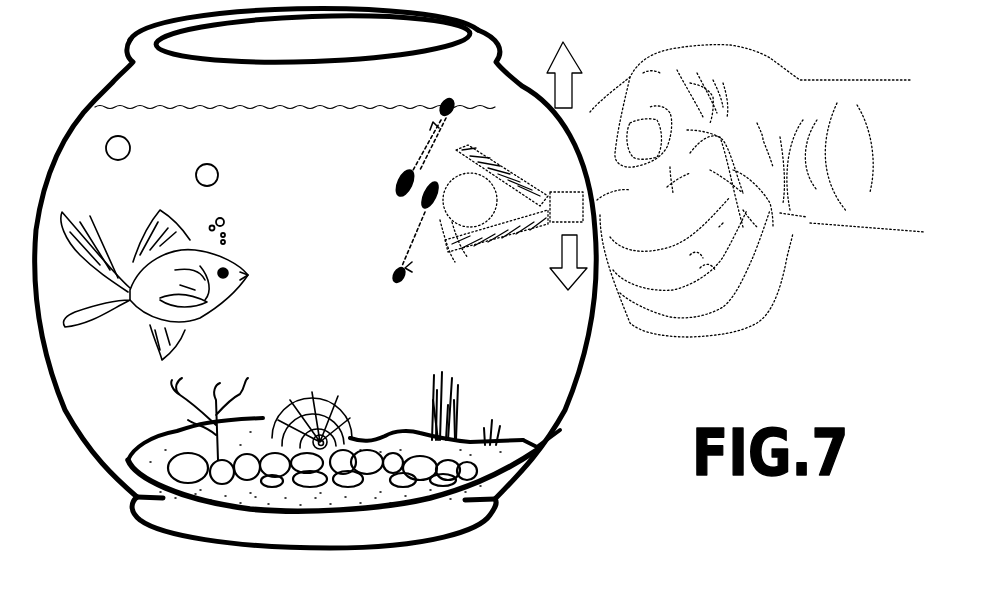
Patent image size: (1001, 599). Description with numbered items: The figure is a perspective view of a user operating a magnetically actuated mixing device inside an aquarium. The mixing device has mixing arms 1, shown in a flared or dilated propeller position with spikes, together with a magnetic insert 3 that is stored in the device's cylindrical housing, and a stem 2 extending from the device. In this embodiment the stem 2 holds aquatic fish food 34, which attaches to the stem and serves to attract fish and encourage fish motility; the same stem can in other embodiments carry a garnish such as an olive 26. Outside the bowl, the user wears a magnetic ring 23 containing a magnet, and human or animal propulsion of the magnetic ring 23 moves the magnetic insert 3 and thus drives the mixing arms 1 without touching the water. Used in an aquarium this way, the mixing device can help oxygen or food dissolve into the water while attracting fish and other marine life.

The mixing arms 1 is at (457, 230).
The stem 2 is at (470, 130).
The magnetic insert 3 is at (590, 208).
The magnetic ring 23 is at (590, 222).
The garnish (olive) 26 is at (446, 200).
The aquatic fish food 34 is at (420, 193).